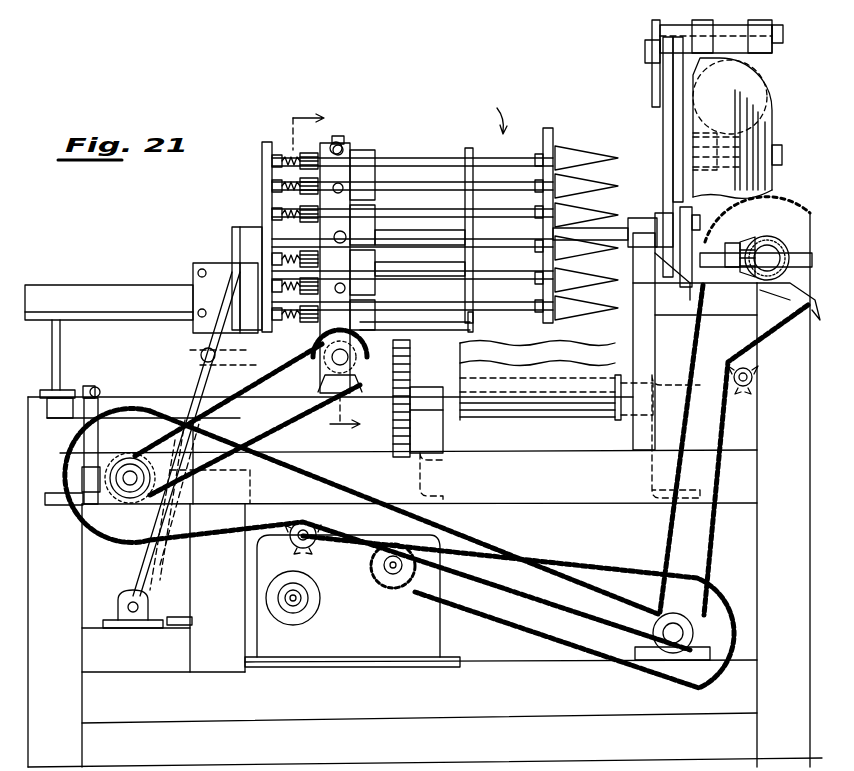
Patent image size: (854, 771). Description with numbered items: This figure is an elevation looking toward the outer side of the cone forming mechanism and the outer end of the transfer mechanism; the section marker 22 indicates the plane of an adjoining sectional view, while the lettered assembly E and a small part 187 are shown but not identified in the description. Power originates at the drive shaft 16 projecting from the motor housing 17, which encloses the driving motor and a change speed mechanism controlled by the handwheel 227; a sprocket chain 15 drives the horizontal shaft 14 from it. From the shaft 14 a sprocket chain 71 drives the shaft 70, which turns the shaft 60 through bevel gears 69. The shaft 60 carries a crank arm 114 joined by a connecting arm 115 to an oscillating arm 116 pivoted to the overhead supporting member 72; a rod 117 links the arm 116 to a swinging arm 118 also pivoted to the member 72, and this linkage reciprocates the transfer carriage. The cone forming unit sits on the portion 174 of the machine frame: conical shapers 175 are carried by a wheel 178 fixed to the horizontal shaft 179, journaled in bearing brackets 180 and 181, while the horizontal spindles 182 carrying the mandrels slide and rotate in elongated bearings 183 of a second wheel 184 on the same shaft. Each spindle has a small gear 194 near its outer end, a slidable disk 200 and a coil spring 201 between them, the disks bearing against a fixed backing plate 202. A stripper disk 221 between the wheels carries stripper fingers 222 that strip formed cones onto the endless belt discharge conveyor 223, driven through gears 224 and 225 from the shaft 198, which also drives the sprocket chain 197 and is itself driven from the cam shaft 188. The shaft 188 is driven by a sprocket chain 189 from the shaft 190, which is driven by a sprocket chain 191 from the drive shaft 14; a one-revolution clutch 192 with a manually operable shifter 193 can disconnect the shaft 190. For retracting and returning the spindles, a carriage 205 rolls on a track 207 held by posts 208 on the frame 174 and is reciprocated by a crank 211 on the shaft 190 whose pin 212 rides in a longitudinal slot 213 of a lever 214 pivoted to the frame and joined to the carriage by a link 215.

The horizontal shaft 14 is at (662, 632).
The sprocket chain 15 is at (486, 622).
The drive shaft 16 is at (380, 560).
The motor housing 17 is at (360, 635).
The section line 22 is at (321, 274).
The shaft 60 is at (787, 258).
The bevel gears 69 is at (765, 288).
The shaft 70 is at (762, 240).
The sprocket chain 71 is at (696, 380).
The overhead supporting member 72 is at (770, 90).
The crank arm 114 is at (675, 300).
The connecting arm 115 is at (674, 132).
The oscillating arm 116 is at (666, 110).
The rod 117 is at (650, 68).
The swinging arm 118 is at (655, 90).
The portion of the machine frame 174 is at (590, 500).
The conical shapers 175 is at (578, 150).
The wheel 178 is at (548, 130).
The horizontal shaft 179 is at (505, 255).
The bearing bracket 180 is at (640, 230).
The bearing bracket 181 is at (236, 262).
The horizontal spindles 182 is at (430, 168).
The elongated bearings 183 is at (375, 195).
The wheel 184 is at (328, 140).
The bolt 187 is at (342, 140).
The shaft 188 is at (325, 370).
The sprocket chain 189 is at (280, 415).
The shaft 190 is at (128, 462).
The sprocket chain 191 is at (460, 530).
The clutch 192 is at (125, 520).
The manually operable shifter 193 is at (100, 385).
The small gear 194 is at (300, 214).
The sprocket chain 197 is at (388, 325).
The shaft 198 is at (455, 345).
The disk 200 is at (262, 158).
The coil springs 201 is at (278, 150).
The fixed backing plate 202 is at (262, 196).
The carriage 205 is at (193, 272).
The track 207 is at (63, 295).
The posts 208 is at (52, 342).
The crank 211 is at (180, 410).
The pin 212 is at (185, 492).
The longitudinal slot 213 is at (200, 471).
The lever 214 is at (140, 582).
The link 215 is at (200, 348).
The stripper disk 221 is at (470, 203).
The stripper fingers 222 is at (468, 150).
The endless belt discharge conveyor 223 is at (555, 412).
The gear 224 is at (415, 355).
The gear 225 is at (435, 430).
The handwheel 227 is at (318, 610).
The assembly E is at (497, 109).